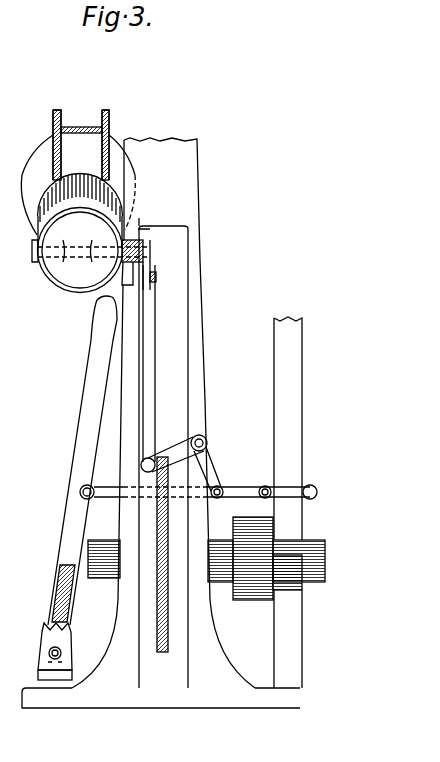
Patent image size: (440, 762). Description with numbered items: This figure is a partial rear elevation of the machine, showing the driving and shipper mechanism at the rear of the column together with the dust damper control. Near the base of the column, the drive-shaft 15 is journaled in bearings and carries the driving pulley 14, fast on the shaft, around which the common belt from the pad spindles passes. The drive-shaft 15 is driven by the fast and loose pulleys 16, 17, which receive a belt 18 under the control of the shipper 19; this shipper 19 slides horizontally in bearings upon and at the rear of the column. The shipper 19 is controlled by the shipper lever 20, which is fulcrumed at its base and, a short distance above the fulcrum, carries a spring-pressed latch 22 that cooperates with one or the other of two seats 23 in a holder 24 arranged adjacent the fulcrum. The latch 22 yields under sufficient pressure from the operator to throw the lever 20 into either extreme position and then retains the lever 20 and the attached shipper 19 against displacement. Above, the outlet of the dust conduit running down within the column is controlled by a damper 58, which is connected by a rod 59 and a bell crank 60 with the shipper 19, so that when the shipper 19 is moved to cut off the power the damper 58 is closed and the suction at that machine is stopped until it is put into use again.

The driving pulley 14 is at (165, 652).
The drive-shaft 15 is at (97, 548).
The fast pulley 16 is at (258, 592).
The loose pulley 17 is at (315, 578).
The belt 18 is at (298, 438).
The shipper 19 is at (310, 487).
The shipper lever 20 is at (85, 433).
The spring-pressed latch 22 is at (65, 605).
The seats 23 is at (48, 637).
The holder 24 is at (50, 655).
The damper 58 is at (67, 281).
The rod 59 is at (152, 368).
The bell crank 60 is at (210, 465).